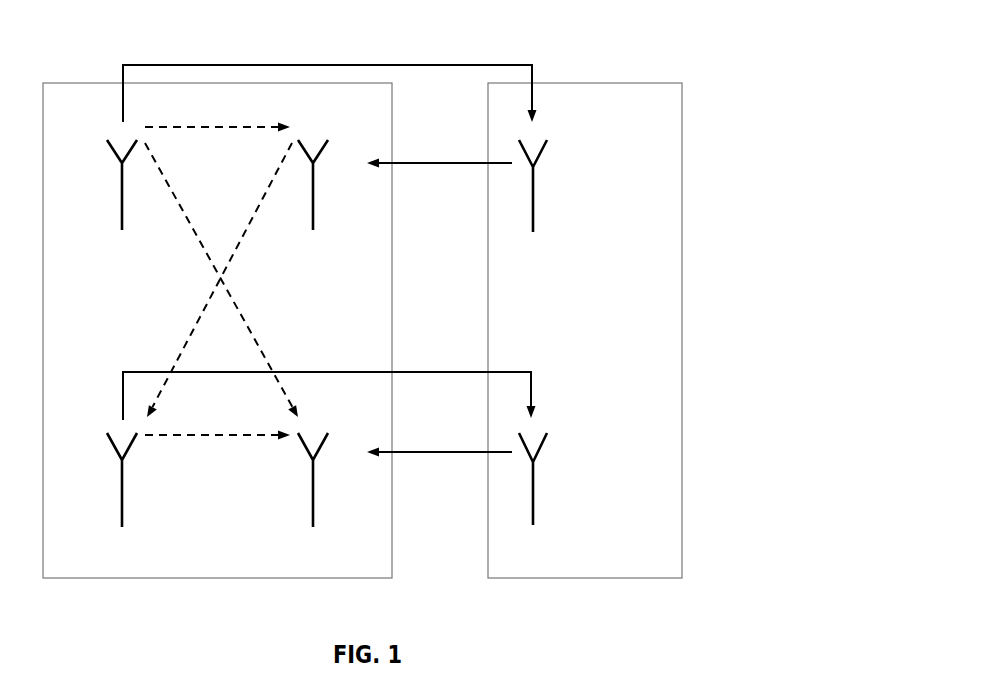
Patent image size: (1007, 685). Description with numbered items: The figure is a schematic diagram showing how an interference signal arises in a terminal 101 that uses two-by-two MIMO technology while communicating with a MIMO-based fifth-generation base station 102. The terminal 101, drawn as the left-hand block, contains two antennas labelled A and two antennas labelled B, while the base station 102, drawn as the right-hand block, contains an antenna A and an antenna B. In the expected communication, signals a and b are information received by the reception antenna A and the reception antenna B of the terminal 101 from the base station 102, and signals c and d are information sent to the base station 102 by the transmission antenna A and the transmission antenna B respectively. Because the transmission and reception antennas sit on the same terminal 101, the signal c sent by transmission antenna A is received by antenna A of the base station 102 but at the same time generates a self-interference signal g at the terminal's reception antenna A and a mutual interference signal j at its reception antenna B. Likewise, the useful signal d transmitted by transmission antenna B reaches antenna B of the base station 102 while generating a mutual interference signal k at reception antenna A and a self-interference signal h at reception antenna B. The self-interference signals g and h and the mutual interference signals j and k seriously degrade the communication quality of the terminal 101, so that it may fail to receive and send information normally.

The terminal 101 is at (58, 82).
The base station 102 is at (622, 82).
The signal a is at (439, 150).
The signal b is at (439, 438).
The signal c is at (330, 77).
The signal d is at (329, 376).
The self-interference signal g is at (217, 117).
The self-interference signal h is at (217, 422).
The mutual interference signal j is at (221, 280).
The mutual interference signal k is at (219, 280).